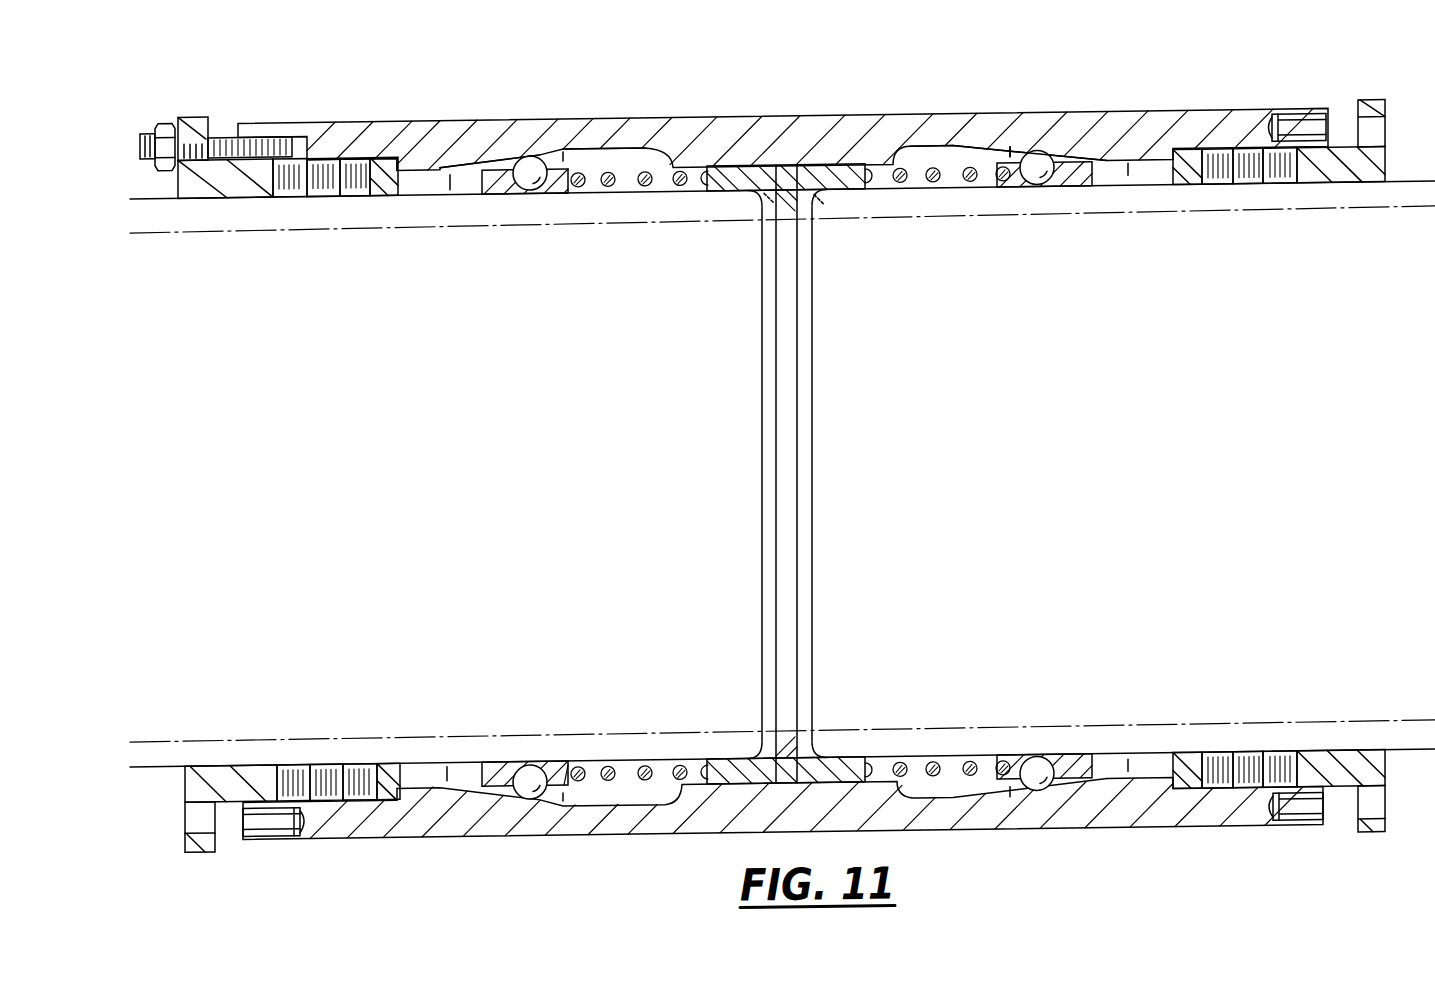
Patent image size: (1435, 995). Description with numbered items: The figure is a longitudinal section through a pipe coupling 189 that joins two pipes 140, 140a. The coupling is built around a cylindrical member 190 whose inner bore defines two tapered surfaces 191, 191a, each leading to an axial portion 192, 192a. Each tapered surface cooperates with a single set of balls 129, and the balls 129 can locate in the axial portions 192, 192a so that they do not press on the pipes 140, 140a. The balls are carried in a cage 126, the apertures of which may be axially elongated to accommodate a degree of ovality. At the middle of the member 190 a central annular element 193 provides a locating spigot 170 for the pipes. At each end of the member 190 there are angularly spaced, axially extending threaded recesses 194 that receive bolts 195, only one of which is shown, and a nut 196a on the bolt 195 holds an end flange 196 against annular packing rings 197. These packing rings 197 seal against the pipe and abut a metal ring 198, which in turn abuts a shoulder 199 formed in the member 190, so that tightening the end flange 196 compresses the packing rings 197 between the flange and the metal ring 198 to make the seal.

The cage 126 is at (1082, 188).
The balls 129 is at (530, 152).
The pipe 140 is at (855, 204).
The pipe 140a is at (707, 212).
The locating spigot 170 is at (780, 197).
The pipe coupling 189 is at (855, 112).
The cylindrical member 190 is at (613, 123).
The tapered surface 191 is at (1103, 163).
The tapered surface 191a is at (450, 178).
The axial portion 192 is at (962, 146).
The axial portion 192a is at (627, 148).
The central annular element 193 is at (785, 173).
The threaded recess 194 is at (1298, 134).
The bolt 195 is at (227, 187).
The end flange 196 is at (198, 114).
The nut 196a is at (163, 112).
The annular packing ring 197 is at (350, 191).
The metal ring 198 is at (388, 192).
The shoulder 199 is at (397, 148).